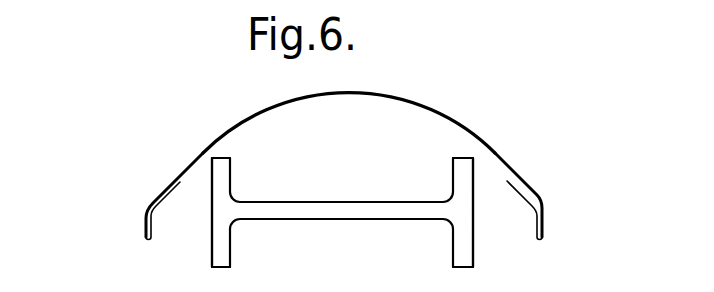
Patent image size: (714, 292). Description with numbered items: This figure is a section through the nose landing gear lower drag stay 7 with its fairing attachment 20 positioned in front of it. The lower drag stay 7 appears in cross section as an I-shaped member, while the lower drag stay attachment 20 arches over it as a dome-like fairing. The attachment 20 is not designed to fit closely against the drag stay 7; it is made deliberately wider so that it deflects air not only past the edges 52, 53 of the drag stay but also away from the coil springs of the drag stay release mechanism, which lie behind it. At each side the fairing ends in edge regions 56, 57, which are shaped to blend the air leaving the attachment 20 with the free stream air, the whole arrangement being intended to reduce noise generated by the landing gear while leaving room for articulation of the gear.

The lower drag stay attachment 20 is at (432, 107).
The lower drag stay 7 is at (280, 201).
The edge 52 is at (213, 157).
The edge 53 is at (465, 155).
The edge region 56 is at (143, 228).
The edge region 57 is at (545, 213).